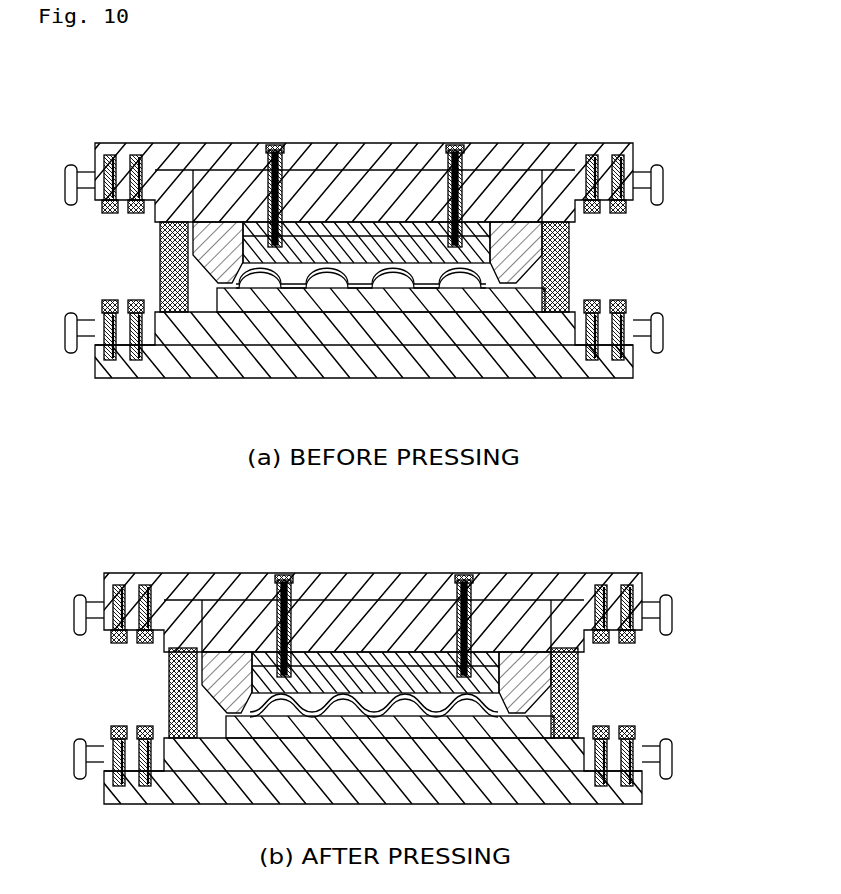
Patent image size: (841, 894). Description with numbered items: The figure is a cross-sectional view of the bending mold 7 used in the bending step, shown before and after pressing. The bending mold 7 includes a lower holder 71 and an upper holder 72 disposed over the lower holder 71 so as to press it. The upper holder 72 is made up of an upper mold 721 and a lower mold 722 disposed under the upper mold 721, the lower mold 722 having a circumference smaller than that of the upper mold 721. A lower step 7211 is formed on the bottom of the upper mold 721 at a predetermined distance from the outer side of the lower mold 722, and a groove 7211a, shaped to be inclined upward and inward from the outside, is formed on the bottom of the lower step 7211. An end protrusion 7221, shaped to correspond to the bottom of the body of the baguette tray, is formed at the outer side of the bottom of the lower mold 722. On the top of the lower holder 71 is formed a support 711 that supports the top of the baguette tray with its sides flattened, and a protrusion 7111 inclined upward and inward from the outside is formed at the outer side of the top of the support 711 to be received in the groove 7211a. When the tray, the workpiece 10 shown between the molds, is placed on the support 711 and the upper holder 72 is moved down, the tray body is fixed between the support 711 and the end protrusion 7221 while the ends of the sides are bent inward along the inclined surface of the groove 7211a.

The bending mold 7 is at (208, 112).
The glass substrate 10 is at (312, 244).
The lower holder 71 is at (432, 378).
The upper holder 72 is at (670, 232).
The upper mold 721 is at (588, 206).
The lower mold 722 is at (545, 250).
The support 711 is at (556, 290).
The protrusion 7111 is at (195, 266).
The lower step 7211 is at (160, 243).
The guide surface 7211a is at (212, 190).
The end protrusion 7221 is at (548, 266).